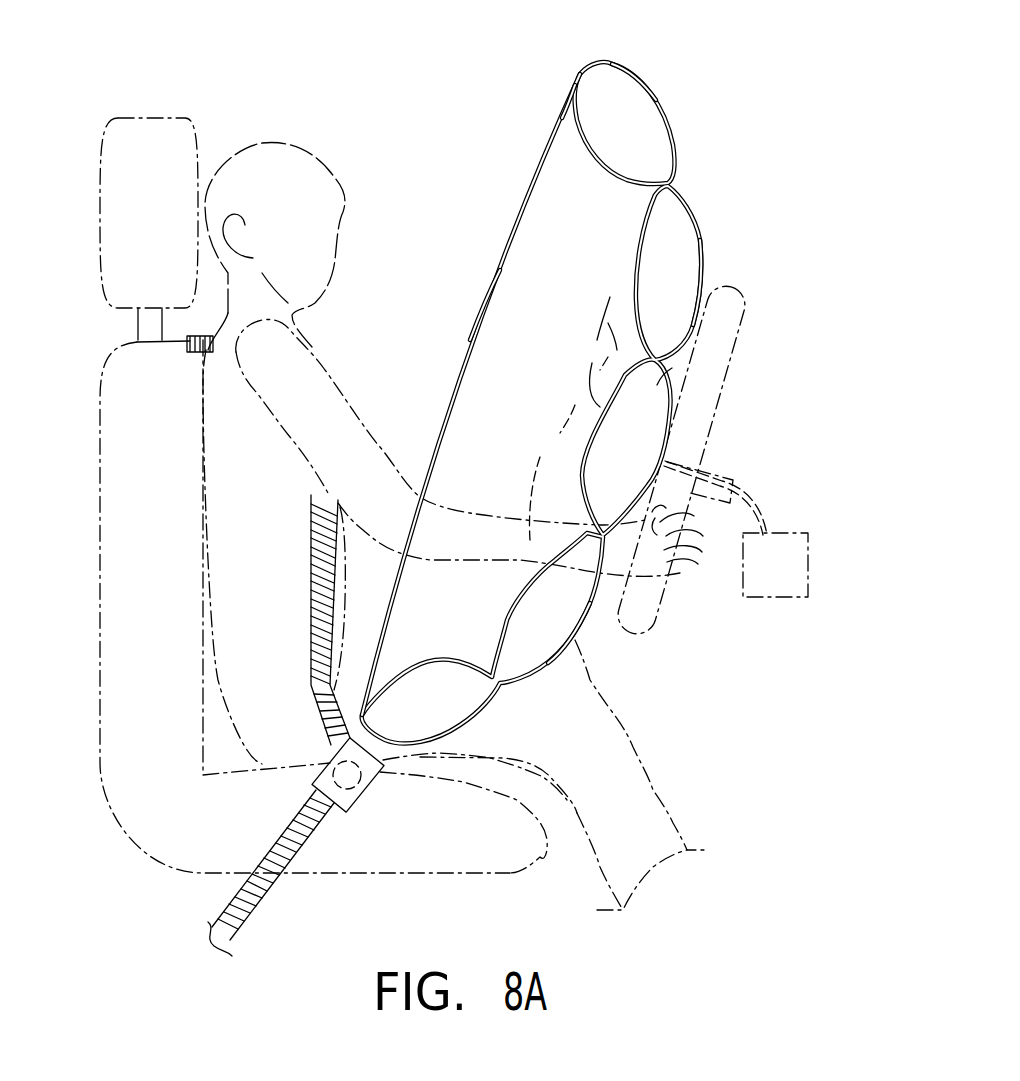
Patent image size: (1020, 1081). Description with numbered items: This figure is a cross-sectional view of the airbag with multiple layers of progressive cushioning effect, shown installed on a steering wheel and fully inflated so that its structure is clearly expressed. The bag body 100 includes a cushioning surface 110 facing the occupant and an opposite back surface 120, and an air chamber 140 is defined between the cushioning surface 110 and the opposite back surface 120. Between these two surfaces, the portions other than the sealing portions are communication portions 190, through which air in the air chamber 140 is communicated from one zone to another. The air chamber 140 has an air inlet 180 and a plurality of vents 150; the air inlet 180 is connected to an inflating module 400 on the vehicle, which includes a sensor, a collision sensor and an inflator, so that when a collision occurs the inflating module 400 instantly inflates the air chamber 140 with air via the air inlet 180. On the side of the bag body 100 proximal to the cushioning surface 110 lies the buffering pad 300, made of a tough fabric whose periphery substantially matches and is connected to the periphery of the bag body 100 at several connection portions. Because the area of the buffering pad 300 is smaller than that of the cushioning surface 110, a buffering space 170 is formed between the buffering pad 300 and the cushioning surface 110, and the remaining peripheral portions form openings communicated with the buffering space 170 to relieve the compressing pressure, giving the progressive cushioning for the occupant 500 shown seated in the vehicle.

The bag body 100 is at (672, 115).
The cushioning surface 110 is at (576, 120).
The opposite back surface 120 is at (647, 77).
The air chamber 140 is at (627, 150).
The vents 150 is at (700, 263).
The buffering space 170 is at (547, 197).
The air inlet 180 is at (675, 460).
The communication portions 190 is at (593, 348).
The buffering pad 300 is at (482, 303).
The inflating module 400 is at (762, 597).
The occupant 500 is at (245, 142).